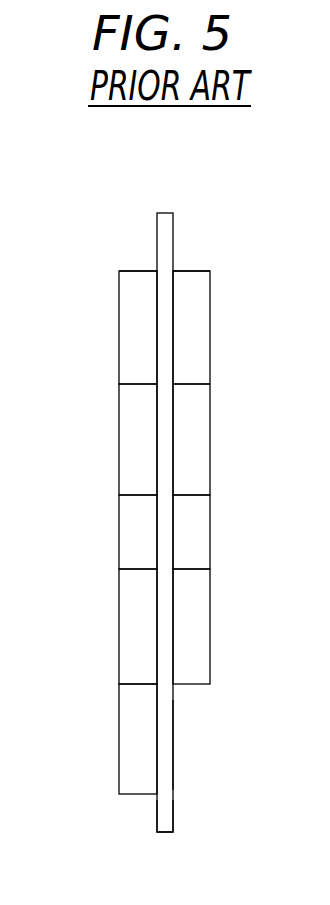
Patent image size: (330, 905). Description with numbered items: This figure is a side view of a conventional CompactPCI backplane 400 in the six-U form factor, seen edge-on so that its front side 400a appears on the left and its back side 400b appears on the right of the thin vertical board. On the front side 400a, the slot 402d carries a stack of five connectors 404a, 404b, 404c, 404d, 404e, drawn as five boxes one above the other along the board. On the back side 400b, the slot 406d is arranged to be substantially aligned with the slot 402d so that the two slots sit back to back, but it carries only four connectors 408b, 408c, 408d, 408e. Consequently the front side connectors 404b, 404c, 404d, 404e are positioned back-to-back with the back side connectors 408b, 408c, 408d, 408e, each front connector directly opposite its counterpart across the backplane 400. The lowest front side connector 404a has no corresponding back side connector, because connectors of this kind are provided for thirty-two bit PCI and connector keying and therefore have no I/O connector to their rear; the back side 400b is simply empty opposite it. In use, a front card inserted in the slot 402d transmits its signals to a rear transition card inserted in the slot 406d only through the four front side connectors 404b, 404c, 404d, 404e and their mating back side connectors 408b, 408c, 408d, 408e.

The backplane 400 is at (166, 213).
The front side 400a is at (157, 815).
The back side 400b is at (173, 748).
The slot 402d is at (135, 270).
The connector 404a is at (119, 743).
The connector 404b is at (119, 617).
The connector 404c is at (119, 517).
The connector 404d is at (119, 426).
The connector 404e is at (119, 313).
The slot 406d is at (189, 270).
The connector 408b is at (210, 613).
The connector 408c is at (210, 515).
The connector 408d is at (210, 426).
The connector 408e is at (210, 313).